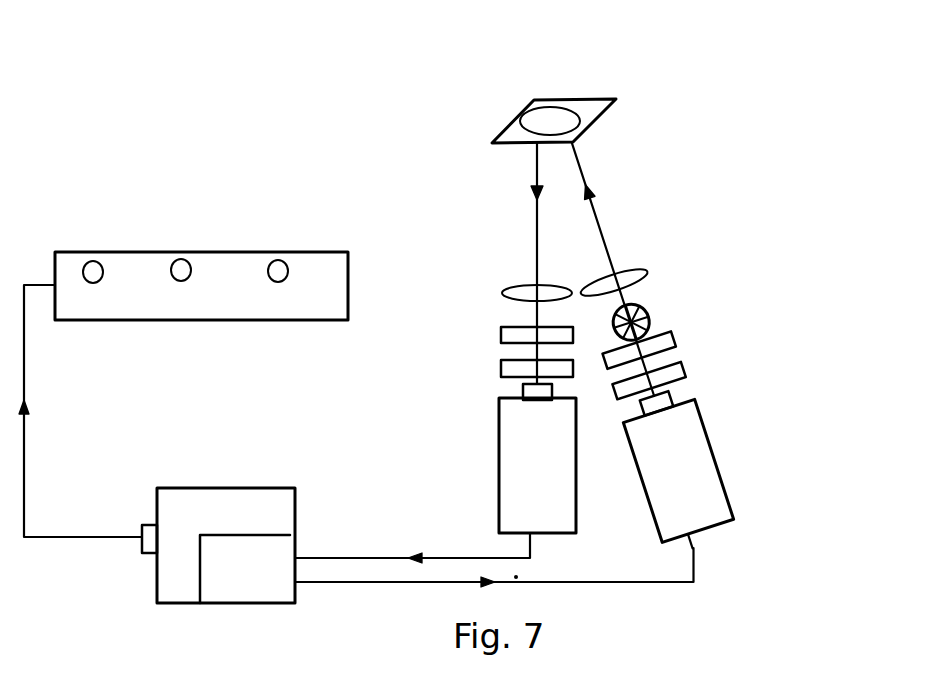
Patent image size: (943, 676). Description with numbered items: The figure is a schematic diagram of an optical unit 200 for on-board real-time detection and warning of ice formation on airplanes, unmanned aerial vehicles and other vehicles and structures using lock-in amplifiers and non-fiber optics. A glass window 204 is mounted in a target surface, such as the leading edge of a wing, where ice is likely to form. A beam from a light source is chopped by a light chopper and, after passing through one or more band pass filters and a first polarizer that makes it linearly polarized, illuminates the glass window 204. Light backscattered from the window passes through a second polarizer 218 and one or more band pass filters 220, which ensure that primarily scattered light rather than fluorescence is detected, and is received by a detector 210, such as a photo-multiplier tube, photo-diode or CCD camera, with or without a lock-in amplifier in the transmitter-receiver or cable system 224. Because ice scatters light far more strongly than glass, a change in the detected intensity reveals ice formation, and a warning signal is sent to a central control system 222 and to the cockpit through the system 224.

The optical unit 200 is at (446, 134).
The glass window 204 is at (596, 100).
The detector 210 is at (499, 455).
The polarizer P2 218 is at (500, 334).
The band pass filter 220 is at (500, 374).
The central control system 222 is at (250, 252).
The transmitter-receiver or cable system 224 is at (213, 488).